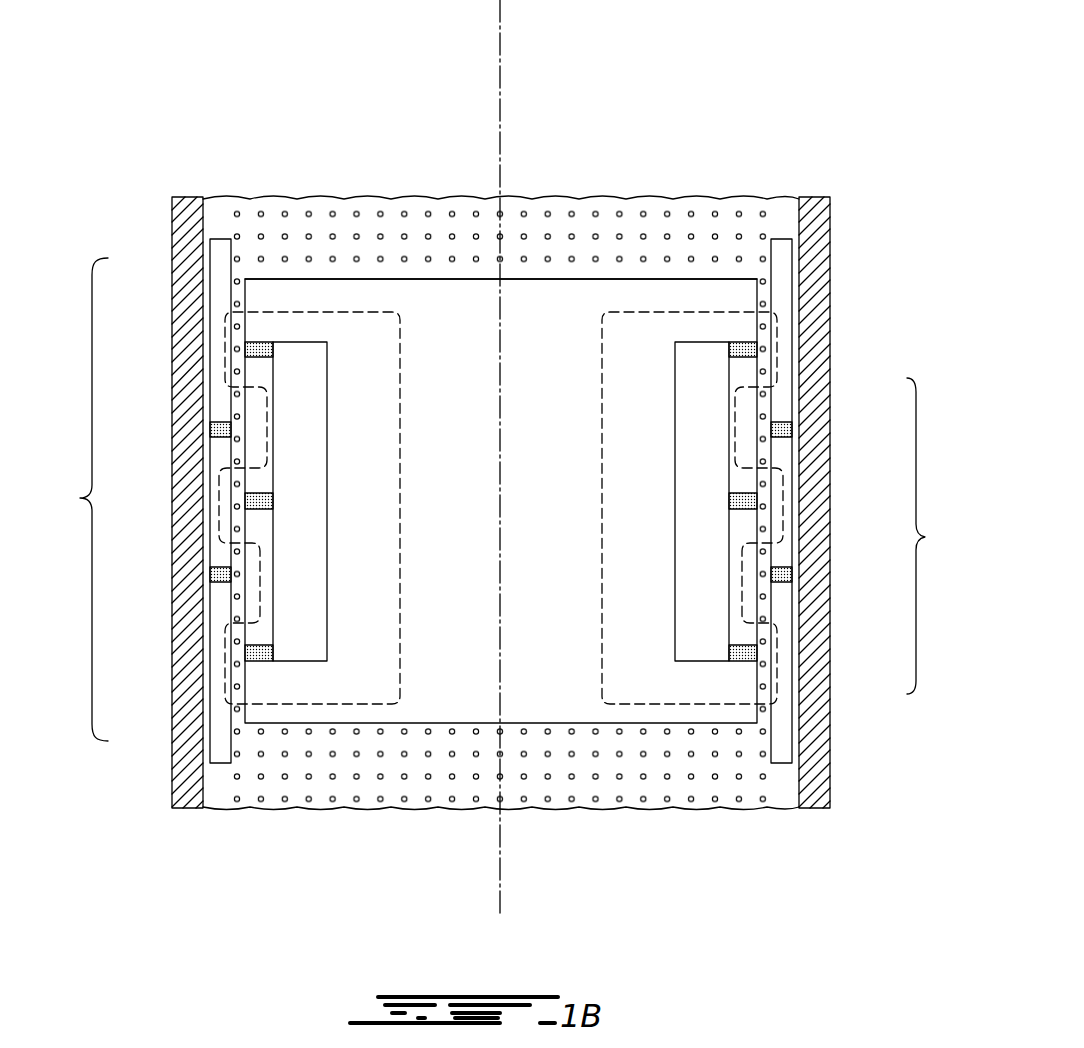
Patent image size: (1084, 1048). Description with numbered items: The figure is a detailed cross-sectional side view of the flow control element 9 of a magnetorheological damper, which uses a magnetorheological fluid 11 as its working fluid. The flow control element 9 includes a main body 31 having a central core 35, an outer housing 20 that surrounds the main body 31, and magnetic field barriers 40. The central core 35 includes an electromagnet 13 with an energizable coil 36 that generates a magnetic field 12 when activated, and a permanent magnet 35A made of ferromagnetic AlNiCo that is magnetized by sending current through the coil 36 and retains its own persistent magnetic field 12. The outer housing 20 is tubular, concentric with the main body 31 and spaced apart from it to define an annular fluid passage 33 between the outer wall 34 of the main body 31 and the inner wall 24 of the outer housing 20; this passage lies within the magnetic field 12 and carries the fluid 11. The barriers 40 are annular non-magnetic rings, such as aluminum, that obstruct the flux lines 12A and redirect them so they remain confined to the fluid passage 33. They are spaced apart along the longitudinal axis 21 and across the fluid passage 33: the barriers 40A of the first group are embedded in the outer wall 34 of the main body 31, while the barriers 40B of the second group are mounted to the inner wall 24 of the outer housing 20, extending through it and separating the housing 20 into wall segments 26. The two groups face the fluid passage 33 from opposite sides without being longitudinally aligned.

The flow control element 9 is at (665, 253).
The magnetorheological fluid 11 is at (591, 251).
The magnetic field 12 is at (312, 311).
The flux lines 12A is at (711, 310).
The electromagnet 13 is at (300, 661).
The outer housing 20 is at (790, 275).
The longitudinal axis 21 is at (500, 47).
The inner wall 24 is at (765, 253).
The wall segments 26 is at (800, 312).
The main body 31 is at (441, 656).
The fluid passage 33 is at (240, 273).
The outer wall 34 is at (752, 404).
The central core 35 is at (463, 500).
The permanent magnet 35A is at (472, 337).
The energizable coil 36 is at (313, 523).
The magnetic field barriers 40 is at (503, 499).
The barriers of the first group 40A is at (245, 350).
The barriers of the second group 40B is at (210, 428).